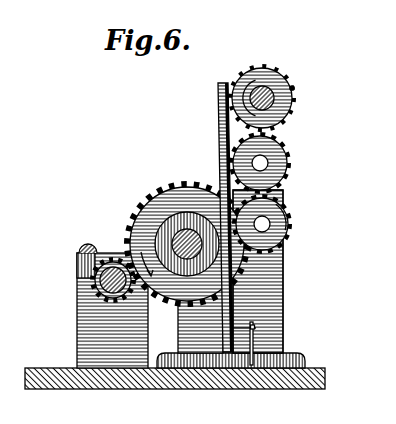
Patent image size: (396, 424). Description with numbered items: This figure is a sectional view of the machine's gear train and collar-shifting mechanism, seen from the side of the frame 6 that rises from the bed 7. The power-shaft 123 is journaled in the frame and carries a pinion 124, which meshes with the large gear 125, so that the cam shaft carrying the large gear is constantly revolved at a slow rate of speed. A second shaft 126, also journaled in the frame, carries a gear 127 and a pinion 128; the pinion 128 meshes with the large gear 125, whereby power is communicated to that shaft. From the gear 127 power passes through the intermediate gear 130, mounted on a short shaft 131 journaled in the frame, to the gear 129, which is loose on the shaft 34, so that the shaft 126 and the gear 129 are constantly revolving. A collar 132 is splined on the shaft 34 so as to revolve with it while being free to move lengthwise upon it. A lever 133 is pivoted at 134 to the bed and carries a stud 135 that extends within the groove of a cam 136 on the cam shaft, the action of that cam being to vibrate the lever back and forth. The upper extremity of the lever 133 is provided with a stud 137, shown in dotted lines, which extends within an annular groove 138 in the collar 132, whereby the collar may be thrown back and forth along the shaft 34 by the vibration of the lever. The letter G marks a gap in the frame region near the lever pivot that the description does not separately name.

The frame 6 is at (284, 260).
The bed 7 is at (175, 393).
The shaft 34 is at (294, 87).
The gap G is at (268, 331).
The power-shaft 123 is at (94, 283).
The pinion 124 is at (79, 297).
The large gear 125 is at (141, 206).
The shaft 126 is at (270, 219).
The gear 127 is at (291, 221).
The pinion 128 is at (288, 233).
The gear 129 is at (270, 65).
The intermediate gear 130 is at (284, 157).
The short shaft 131 is at (270, 158).
The collar 132 is at (281, 83).
The lever 133 is at (221, 140).
The pivot 134 is at (280, 336).
The stud 135 is at (284, 278).
The cam 136 is at (284, 298).
The stud 137 is at (244, 95).
The annular groove 138 is at (284, 102).